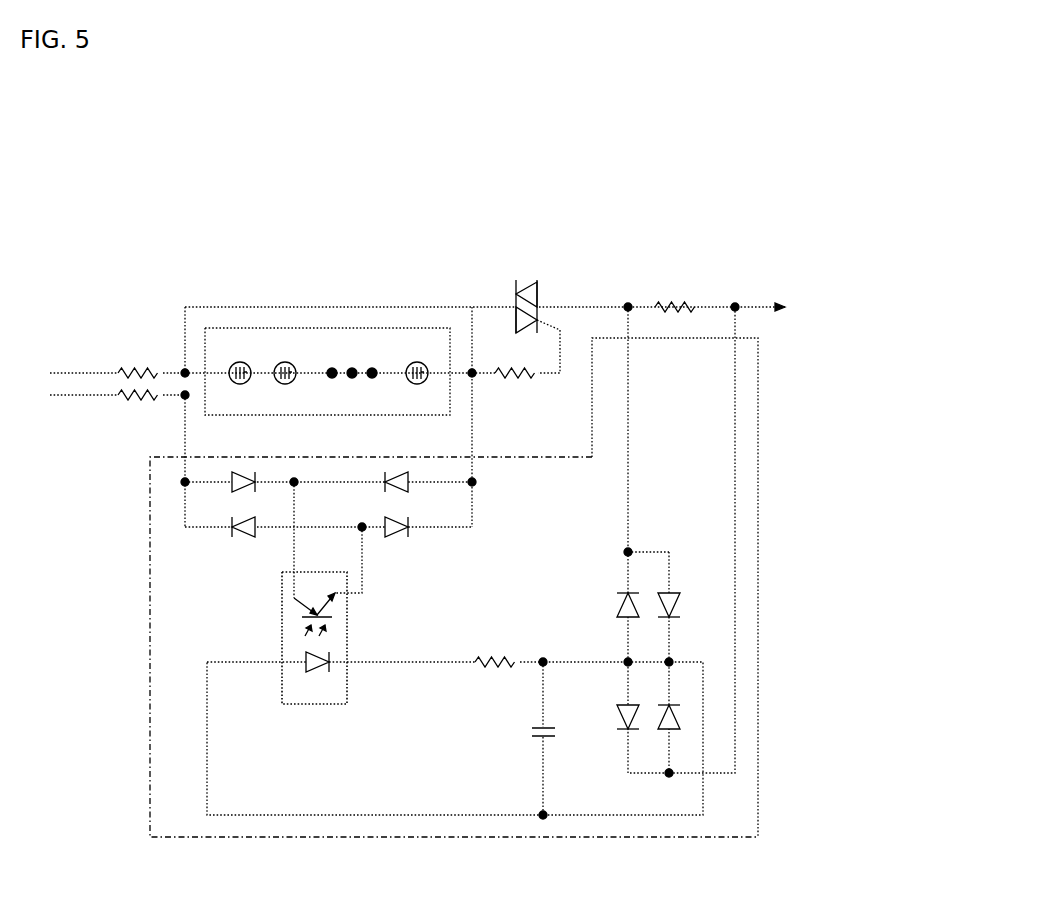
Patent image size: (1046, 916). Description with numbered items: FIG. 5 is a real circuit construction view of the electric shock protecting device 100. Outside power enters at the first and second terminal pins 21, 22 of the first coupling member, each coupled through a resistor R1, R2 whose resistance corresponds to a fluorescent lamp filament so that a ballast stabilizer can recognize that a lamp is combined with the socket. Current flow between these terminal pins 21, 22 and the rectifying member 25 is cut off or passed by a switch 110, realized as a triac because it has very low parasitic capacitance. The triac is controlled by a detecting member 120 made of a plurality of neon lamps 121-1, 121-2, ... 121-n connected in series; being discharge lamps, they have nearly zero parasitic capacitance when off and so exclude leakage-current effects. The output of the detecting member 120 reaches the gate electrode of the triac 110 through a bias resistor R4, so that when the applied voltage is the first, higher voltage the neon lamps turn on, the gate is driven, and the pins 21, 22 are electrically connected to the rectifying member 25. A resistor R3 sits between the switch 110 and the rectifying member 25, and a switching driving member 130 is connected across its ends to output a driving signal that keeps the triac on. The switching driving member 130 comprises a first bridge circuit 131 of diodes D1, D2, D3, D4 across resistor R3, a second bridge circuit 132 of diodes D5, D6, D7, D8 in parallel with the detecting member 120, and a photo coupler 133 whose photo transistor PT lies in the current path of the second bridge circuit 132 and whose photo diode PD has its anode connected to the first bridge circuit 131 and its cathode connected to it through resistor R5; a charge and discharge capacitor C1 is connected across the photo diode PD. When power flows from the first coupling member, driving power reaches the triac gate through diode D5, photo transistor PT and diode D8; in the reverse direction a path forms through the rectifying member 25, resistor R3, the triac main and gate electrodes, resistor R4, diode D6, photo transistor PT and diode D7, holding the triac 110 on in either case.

The electric shock protecting device 100 is at (482, 190).
The switch 110 is at (524, 280).
The detecting member 120 is at (327, 331).
The neon lamp 121-1 is at (240, 361).
The neon lamp 121-2 is at (285, 361).
The neon lamp 121-n is at (417, 361).
The switching driving member 130 is at (758, 405).
The first bridge circuit 131 is at (689, 542).
The second bridge circuit 132 is at (222, 542).
The photo coupler 133 is at (311, 723).
The first terminal pin 21 is at (72, 366).
The second terminal pin 22 is at (72, 402).
The rectifying member 25 is at (839, 314).
The resistor R1 is at (138, 362).
The resistor R2 is at (138, 407).
The resistor R3 is at (675, 297).
The bias resistor R4 is at (503, 362).
The resistor R5 is at (495, 652).
The charge and discharge capacitor C1 is at (556, 738).
The diode D1 is at (616, 607).
The diode D2 is at (682, 600).
The diode D3 is at (693, 709).
The diode D4 is at (616, 716).
The diode D5 is at (233, 470).
The diode D6 is at (395, 470).
The diode D7 is at (242, 540).
The diode D8 is at (395, 540).
The photo diode PD is at (304, 658).
The photo transistor PT is at (337, 603).